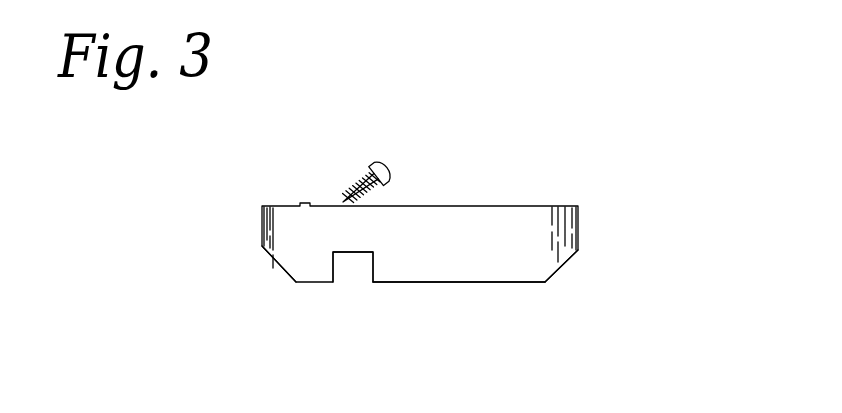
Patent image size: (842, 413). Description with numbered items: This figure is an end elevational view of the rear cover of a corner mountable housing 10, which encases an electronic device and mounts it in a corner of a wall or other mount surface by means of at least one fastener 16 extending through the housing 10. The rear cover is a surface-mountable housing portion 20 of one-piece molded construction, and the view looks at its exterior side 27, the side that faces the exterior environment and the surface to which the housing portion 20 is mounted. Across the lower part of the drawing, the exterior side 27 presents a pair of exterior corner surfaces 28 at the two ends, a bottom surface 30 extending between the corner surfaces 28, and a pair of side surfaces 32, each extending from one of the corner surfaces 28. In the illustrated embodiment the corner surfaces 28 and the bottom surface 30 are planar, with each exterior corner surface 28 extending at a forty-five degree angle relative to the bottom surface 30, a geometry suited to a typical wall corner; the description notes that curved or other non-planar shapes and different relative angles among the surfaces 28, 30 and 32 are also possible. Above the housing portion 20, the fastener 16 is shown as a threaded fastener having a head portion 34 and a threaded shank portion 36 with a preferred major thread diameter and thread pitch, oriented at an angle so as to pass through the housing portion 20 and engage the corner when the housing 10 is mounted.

The corner mountable housing 10 is at (418, 231).
The fastener 16 is at (335, 145).
The surface-mountable housing portion 20 is at (507, 204).
The exterior side 27 is at (341, 302).
The exterior corner surfaces 28 is at (411, 310).
The bottom surface 30 is at (459, 317).
The side surfaces 32 is at (418, 237).
The head portion 34 is at (391, 140).
The threaded shank portion 36 is at (319, 175).